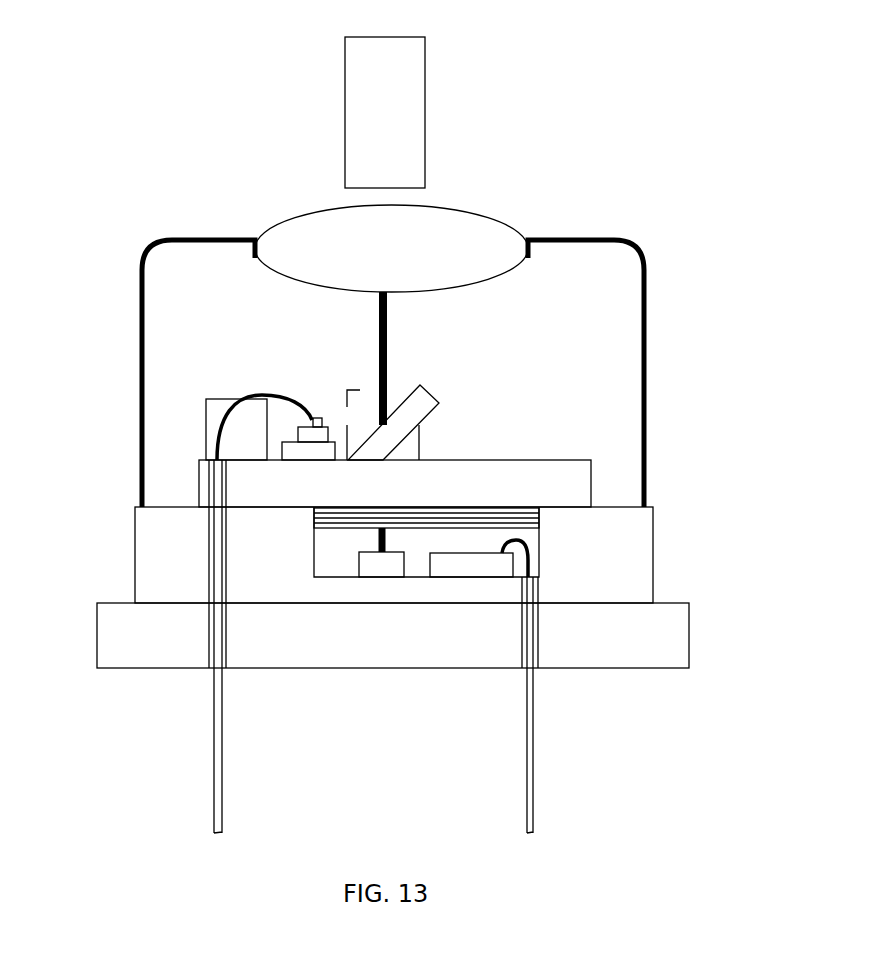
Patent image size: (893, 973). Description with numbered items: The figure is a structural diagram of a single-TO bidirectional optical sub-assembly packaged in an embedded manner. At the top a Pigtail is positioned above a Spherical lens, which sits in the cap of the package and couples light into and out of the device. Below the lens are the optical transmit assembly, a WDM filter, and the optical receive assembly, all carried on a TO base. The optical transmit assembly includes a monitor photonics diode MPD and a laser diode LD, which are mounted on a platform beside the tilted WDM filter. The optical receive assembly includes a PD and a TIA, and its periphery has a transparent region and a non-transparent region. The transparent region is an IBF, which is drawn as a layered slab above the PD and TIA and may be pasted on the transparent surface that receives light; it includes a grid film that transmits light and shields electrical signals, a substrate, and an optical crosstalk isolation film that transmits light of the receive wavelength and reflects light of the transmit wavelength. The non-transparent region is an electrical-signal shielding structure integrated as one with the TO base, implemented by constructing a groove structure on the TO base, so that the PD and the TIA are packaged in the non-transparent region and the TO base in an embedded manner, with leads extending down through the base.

The pigtail Pigtail is at (408, 136).
The spherical lens Spherical lens is at (500, 223).
The monitor photonics diode MPD is at (233, 407).
The laser diode LD is at (317, 420).
The element WDM filter is at (418, 417).
The element IBF is at (490, 517).
The element TO base is at (580, 583).
The element PD is at (382, 567).
The element TIA is at (477, 565).